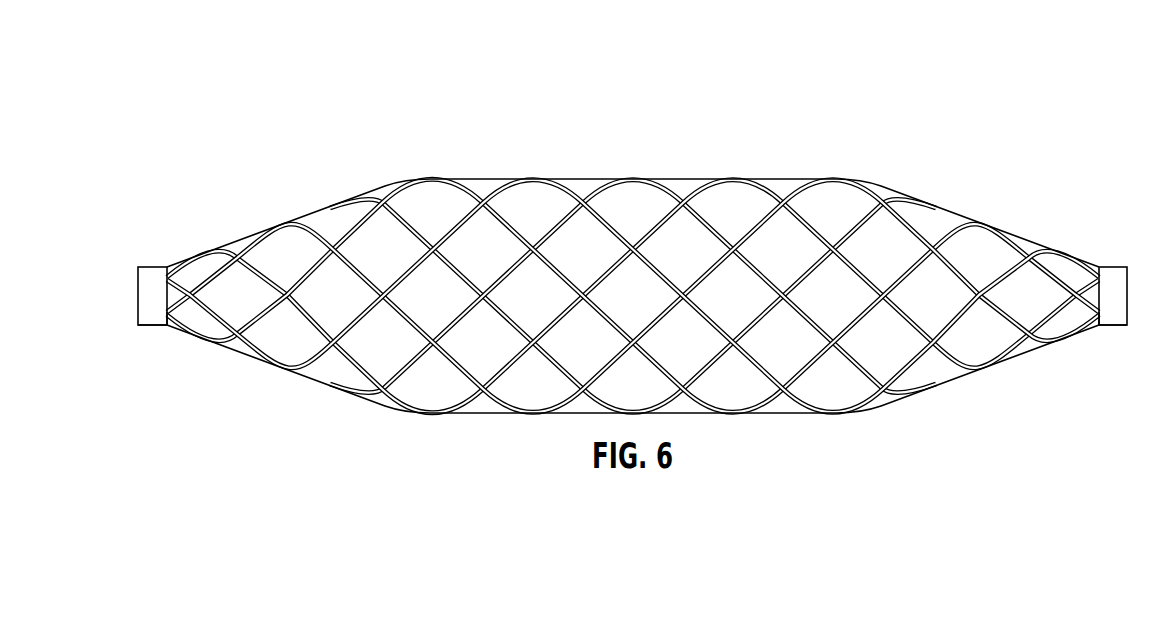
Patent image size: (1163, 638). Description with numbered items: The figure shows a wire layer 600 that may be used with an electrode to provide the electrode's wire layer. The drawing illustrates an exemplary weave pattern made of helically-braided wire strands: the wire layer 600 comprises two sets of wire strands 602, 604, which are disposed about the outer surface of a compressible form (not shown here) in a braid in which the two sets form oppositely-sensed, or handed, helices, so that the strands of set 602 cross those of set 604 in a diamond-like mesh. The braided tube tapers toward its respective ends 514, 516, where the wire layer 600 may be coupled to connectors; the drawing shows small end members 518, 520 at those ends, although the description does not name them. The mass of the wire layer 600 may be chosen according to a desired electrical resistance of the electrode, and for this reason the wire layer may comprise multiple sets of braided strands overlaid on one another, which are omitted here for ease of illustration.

The wire layer 600 is at (633, 245).
The wire strand set 602 is at (458, 373).
The wire strand set 604 is at (460, 217).
The end 514 is at (165, 327).
The end 516 is at (1101, 327).
The first end cap 518 is at (155, 267).
The second end cap 520 is at (1111, 267).